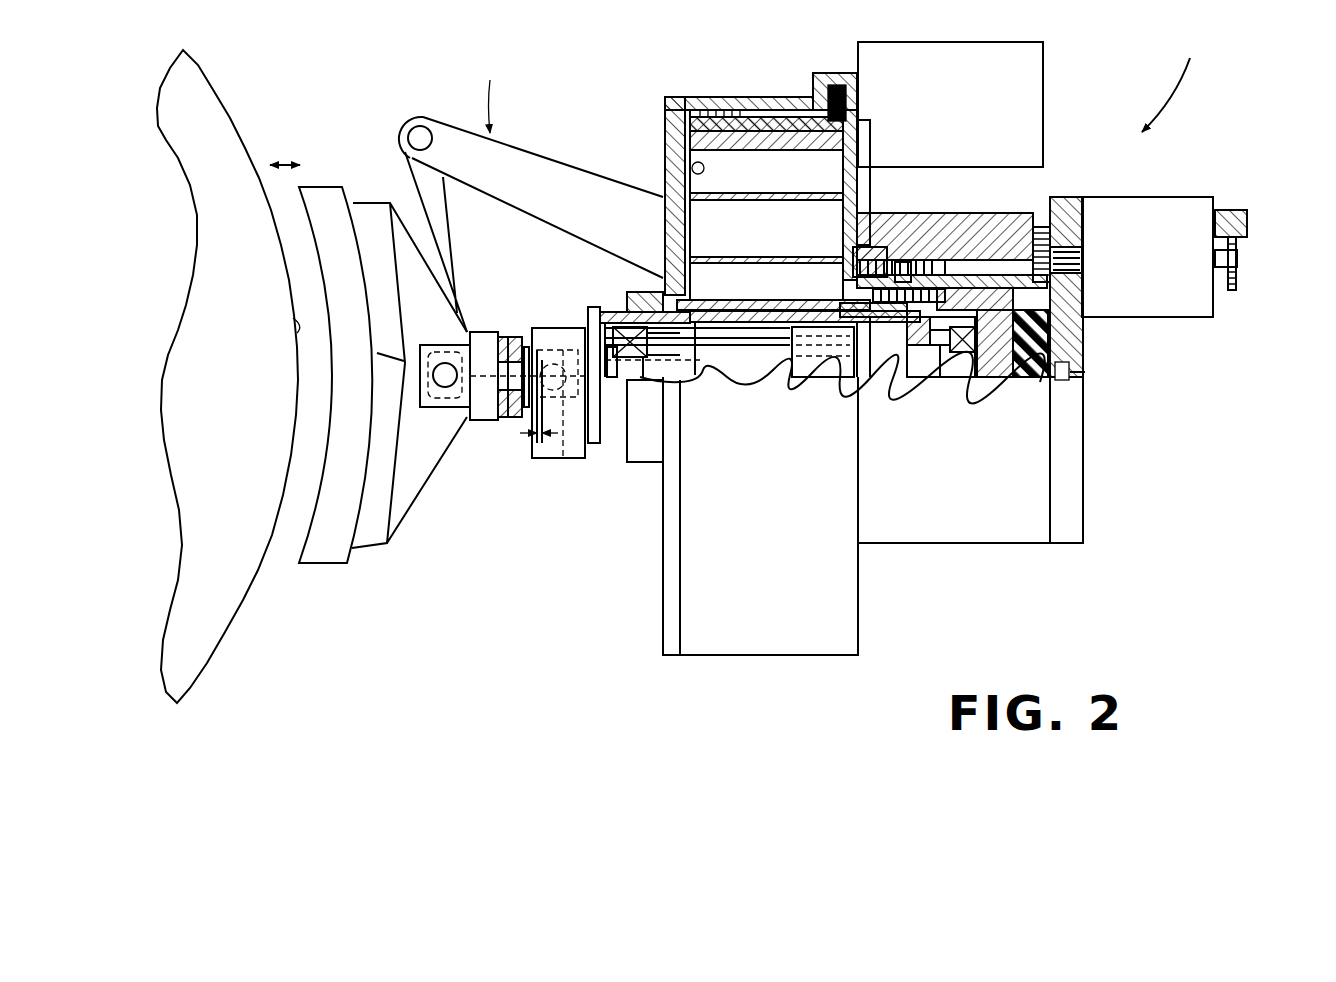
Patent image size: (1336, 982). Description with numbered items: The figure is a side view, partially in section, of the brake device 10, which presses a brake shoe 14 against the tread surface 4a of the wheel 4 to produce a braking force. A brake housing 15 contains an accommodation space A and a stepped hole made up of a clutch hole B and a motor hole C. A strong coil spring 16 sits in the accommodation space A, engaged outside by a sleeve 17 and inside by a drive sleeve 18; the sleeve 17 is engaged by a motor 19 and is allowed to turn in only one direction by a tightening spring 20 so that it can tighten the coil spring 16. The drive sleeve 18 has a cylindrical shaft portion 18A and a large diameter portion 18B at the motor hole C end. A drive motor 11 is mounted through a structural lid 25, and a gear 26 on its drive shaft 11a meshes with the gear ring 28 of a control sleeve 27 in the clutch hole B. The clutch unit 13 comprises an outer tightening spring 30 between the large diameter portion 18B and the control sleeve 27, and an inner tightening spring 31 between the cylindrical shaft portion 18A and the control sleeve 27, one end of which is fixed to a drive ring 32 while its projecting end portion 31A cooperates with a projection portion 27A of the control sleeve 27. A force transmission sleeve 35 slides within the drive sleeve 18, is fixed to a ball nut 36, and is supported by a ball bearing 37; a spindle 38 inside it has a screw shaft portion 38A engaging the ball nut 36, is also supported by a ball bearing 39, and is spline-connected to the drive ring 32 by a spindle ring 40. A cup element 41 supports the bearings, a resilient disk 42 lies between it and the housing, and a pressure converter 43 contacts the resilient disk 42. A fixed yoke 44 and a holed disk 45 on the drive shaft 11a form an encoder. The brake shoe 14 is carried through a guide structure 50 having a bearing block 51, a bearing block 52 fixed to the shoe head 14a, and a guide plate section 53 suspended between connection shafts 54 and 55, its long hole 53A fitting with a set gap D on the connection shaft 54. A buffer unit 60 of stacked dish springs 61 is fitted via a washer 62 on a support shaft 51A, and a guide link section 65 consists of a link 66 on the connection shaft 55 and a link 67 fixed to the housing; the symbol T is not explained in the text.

The wheel 4 is at (217, 607).
The tread surface 4a is at (297, 330).
The brake device 10 is at (1177, 78).
The drive motor 11 is at (1192, 213).
The drive shaft 11a is at (1080, 257).
The clutch unit 13 is at (878, 300).
The brake shoe 14 is at (325, 552).
The shoe head 14a is at (385, 525).
The brake housing 15 is at (723, 98).
The coil spring 16 is at (797, 110).
The sleeve 17 is at (757, 98).
The drive sleeve 18 is at (695, 345).
The cylindrical shaft portion 18A is at (748, 300).
The large diameter portion 18B is at (847, 253).
The motor 19 is at (1032, 62).
The tightening spring 20 is at (668, 114).
The structural lid 25 is at (1075, 483).
The gear 26 is at (1056, 250).
The control sleeve 27 is at (993, 273).
The projection portion 27A is at (873, 250).
The gear ring 28 is at (1015, 280).
The outer tightening spring 30 is at (912, 272).
The inner tightening spring 31 is at (923, 285).
The projecting end portion 31A is at (858, 243).
The drive ring 32 is at (875, 300).
The force transmission sleeve 35 is at (663, 290).
The ball nut 36 is at (813, 360).
The ball bearing 37 is at (620, 313).
The spindle 38 is at (758, 355).
The screw shaft portion 38A is at (727, 360).
The ball bearing 39 is at (967, 352).
The spindle ring 40 is at (937, 290).
The cup element 41 is at (1000, 377).
The resilient disk 42 is at (1040, 378).
The pressure converter 43 is at (1085, 373).
The fixed yoke 44 is at (1243, 213).
The disk 45 is at (1237, 250).
The guide structure 50 is at (476, 427).
The bearing block 51 is at (588, 443).
The support shaft 51A is at (527, 347).
The bearing block 52 is at (468, 340).
The guide plate section 53 is at (492, 355).
The long hole 53A is at (562, 350).
The connection shaft 54 is at (580, 433).
The connection shaft 55 is at (445, 382).
The buffer unit 60 is at (507, 424).
The dish springs 61 is at (508, 343).
The washer 62 is at (518, 420).
The guide link section 65 is at (490, 92).
The link 66 is at (415, 185).
The link 67 is at (543, 158).
The accommodation space A is at (692, 165).
The clutch hole B is at (987, 267).
The motor hole C is at (1058, 240).
The gap D is at (539, 472).
The thrust point T is at (1062, 372).